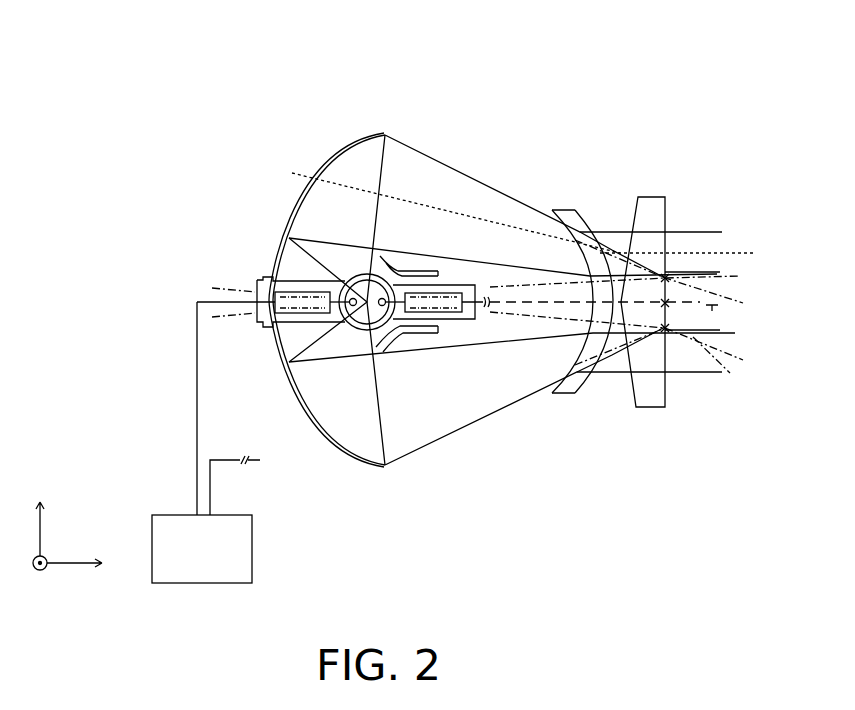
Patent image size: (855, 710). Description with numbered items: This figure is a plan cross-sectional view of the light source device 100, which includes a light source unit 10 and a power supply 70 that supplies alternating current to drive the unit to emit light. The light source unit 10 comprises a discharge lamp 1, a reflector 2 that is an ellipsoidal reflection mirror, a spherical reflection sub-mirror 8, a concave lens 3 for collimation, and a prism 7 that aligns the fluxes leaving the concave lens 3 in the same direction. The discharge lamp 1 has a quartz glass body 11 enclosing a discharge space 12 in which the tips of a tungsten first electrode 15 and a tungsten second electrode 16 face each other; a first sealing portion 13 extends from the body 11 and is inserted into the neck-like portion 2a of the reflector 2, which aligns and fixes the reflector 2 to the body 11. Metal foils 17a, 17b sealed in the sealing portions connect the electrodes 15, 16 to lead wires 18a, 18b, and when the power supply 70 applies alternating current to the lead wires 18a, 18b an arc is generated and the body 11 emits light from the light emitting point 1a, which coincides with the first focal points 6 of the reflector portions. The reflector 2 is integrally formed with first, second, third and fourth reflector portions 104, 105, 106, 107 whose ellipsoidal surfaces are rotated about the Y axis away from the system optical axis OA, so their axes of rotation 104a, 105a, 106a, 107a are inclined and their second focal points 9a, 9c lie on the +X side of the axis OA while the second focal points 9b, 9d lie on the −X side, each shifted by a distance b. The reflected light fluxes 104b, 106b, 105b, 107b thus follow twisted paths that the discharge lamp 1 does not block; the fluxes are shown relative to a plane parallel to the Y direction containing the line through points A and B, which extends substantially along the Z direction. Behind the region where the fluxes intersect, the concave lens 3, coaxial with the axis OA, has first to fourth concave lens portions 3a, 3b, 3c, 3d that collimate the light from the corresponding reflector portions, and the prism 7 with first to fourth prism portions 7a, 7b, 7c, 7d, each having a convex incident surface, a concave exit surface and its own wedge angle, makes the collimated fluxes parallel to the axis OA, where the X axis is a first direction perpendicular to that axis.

The light source device 100 is at (723, 34).
The light source unit 10 is at (571, 115).
The discharge lamp 1 is at (362, 325).
The light emitting point 1a is at (376, 298).
The first focal point 6 is at (381, 296).
The reflector 2 is at (303, 207).
The neck-like portion 2a is at (270, 326).
The first sealing portion 13 is at (288, 366).
The body 11 is at (360, 273).
The discharge space 12 is at (361, 331).
The first electrode 15 is at (348, 318).
The second electrode 16 is at (410, 334).
The metal foil 17a is at (302, 292).
The metal foil 17b is at (432, 293).
The lead wire 18a is at (258, 316).
The lead wire 18b is at (473, 312).
The reflection sub-mirror 8 is at (400, 264).
The concave lens 3 is at (585, 310).
The first concave lens portion 3a is at (583, 218).
The second concave lens portion 3b is at (557, 394).
The third concave lens portion 3c is at (603, 226).
The fourth concave lens portion 3d is at (577, 392).
The prism 7 is at (648, 197).
The first prism portion 7a is at (657, 199).
The second prism portion 7b is at (650, 410).
The third prism portion 7c is at (663, 200).
The fourth prism portion 7d is at (656, 410).
The second focal point 9a is at (666, 276).
The second focal point 9b is at (668, 348).
The second focal point 9c is at (667, 262).
The second focal point 9d is at (667, 338).
The first reflector portion 104 is at (380, 135).
The third reflector portion 106 is at (382, 136).
The second reflector portion 105 is at (380, 466).
The fourth reflector portion 107 is at (384, 467).
The axis of rotation 104a is at (645, 280).
The axis of rotation 106a is at (688, 279).
The axis of rotation 105a is at (640, 342).
The axis of rotation 107a is at (683, 363).
The light flux 104b is at (481, 181).
The light flux 106b is at (484, 184).
The light flux 105b is at (435, 444).
The light flux 107b is at (462, 430).
The power supply 70 is at (252, 558).
The point A of line AB A is at (453, 200).
The point B of line AB B is at (686, 254).
The system optical axis OA is at (629, 320).
The distance b is at (668, 282).
The X axis X is at (27, 525).
The Y axis Y is at (39, 582).
The Z direction Z is at (80, 581).